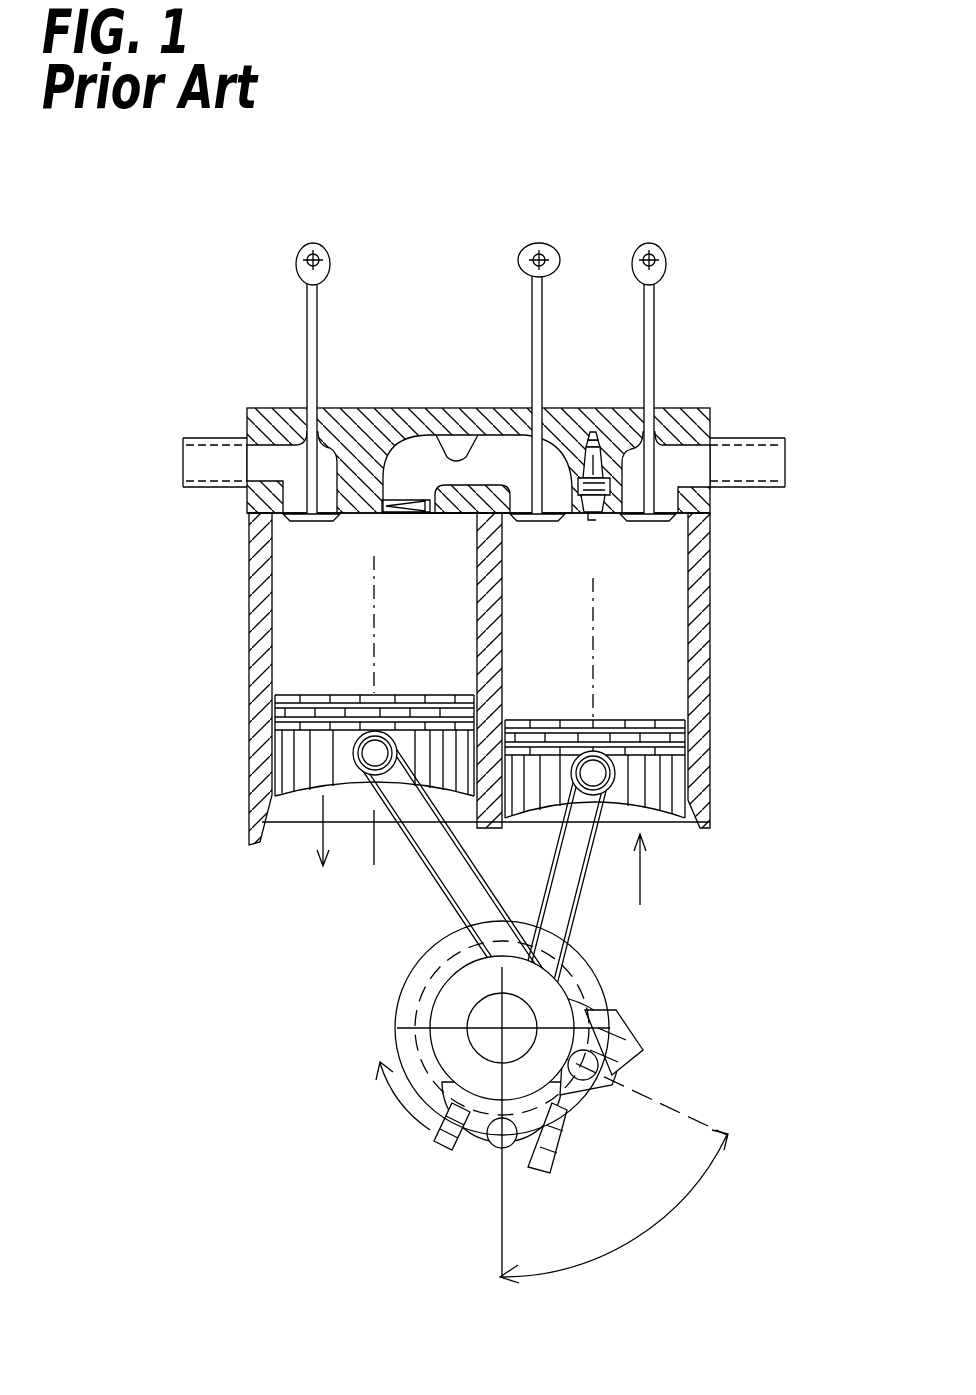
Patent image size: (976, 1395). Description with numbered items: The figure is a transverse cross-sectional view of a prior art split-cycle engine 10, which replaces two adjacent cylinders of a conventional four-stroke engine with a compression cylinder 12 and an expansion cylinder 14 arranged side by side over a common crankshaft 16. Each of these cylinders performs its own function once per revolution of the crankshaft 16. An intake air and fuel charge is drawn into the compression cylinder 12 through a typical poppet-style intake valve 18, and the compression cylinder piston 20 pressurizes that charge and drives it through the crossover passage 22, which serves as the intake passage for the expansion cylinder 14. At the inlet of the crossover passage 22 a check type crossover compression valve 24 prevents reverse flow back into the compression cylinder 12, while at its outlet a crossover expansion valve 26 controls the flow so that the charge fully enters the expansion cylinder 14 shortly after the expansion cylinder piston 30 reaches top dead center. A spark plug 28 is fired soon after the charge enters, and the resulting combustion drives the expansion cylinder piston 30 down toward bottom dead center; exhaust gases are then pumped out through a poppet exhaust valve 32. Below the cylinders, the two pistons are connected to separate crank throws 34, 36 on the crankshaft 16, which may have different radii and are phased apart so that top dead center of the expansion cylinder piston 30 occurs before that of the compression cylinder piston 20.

The split-cycle engine 10 is at (511, 758).
The compression cylinder 12 is at (276, 630).
The expansion cylinder 14 is at (686, 560).
The crankshaft 16 is at (488, 1017).
The intake valves 18 is at (306, 313).
The compression cylinder piston 20 is at (296, 805).
The crossover passage 22 is at (442, 436).
The crossover compression valve 24 is at (407, 492).
The crossover expansion valve 26 is at (545, 348).
The spark plug 28 is at (593, 432).
The expansion cylinder piston 30 is at (689, 822).
The exhaust valves 32 is at (657, 330).
The crank throw 34 is at (604, 1068).
The crank throw 36 is at (498, 1140).